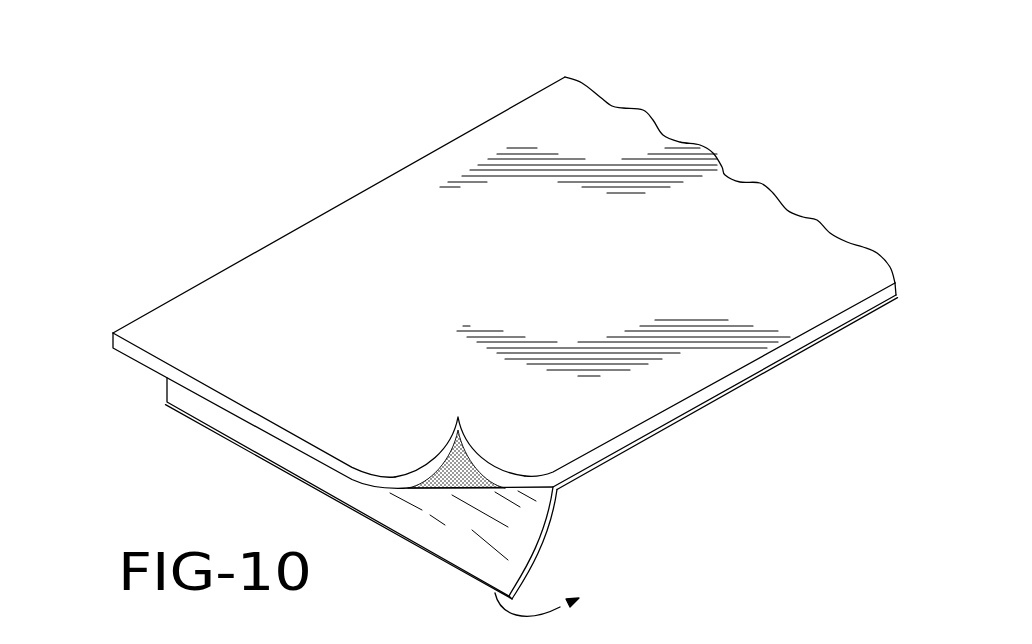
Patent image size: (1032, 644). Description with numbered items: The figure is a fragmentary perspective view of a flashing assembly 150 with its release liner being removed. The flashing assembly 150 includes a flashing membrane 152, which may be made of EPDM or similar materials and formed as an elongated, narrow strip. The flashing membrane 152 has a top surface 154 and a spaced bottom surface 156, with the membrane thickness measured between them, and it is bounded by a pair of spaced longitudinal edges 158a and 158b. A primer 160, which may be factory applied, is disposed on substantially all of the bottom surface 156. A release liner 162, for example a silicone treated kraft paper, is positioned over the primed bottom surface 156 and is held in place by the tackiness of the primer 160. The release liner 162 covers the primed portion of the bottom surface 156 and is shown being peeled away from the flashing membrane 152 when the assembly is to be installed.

The flashing assembly 150 is at (785, 118).
The flashing membrane 152 is at (613, 133).
The top surface 154 is at (779, 228).
The bottom surface 156 is at (440, 490).
The longitudinal edge 158a is at (113, 342).
The longitudinal edge 158b is at (712, 386).
The primer 160 is at (468, 460).
The release liner 162 is at (532, 526).